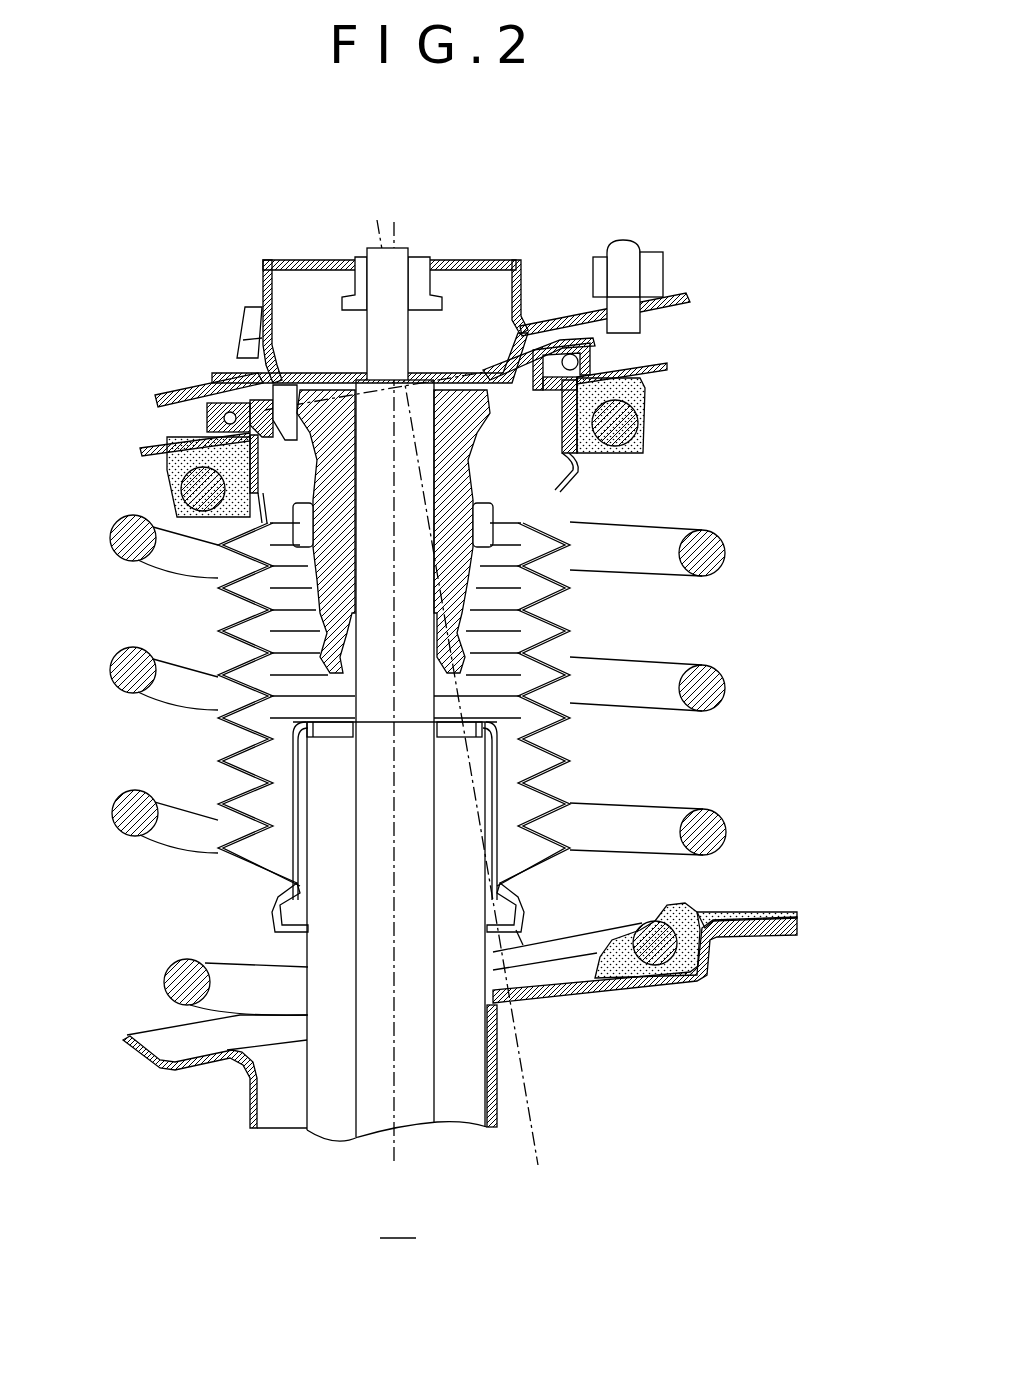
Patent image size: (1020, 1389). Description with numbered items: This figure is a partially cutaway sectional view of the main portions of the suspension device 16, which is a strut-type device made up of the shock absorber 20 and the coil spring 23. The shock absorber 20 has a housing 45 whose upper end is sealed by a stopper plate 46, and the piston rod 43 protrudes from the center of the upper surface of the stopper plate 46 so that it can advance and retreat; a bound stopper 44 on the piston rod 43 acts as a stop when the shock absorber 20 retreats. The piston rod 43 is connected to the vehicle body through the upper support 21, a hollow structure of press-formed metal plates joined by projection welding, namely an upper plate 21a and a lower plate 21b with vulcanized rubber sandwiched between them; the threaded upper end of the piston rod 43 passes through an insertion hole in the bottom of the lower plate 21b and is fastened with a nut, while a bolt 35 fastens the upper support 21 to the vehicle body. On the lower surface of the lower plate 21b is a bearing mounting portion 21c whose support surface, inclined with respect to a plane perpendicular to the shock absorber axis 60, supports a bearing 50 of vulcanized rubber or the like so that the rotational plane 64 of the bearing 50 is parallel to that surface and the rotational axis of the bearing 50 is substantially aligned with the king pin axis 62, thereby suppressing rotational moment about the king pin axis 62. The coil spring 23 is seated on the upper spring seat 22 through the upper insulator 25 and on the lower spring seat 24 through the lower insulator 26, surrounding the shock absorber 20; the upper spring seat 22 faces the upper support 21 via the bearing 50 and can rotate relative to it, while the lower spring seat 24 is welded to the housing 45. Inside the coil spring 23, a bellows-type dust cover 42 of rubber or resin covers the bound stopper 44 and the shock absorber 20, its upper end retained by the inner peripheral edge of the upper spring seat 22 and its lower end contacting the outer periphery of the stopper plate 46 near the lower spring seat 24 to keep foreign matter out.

The suspension device 16 is at (398, 1223).
The shock absorber 20 is at (371, 665).
The upper support 21 is at (395, 302).
The upper plate 21a is at (283, 260).
The lower plate 21b is at (228, 417).
The bearing mounting portion 21c is at (583, 340).
The upper spring seat 22 is at (667, 365).
The coil spring 23 is at (713, 540).
The lower spring seat 24 is at (693, 978).
The upper insulator 25 is at (647, 387).
The lower insulator 26 is at (690, 905).
The bolt 35 is at (260, 303).
The dust cover 42 is at (409, 734).
The piston rod 43 is at (410, 627).
The bound stopper 44 is at (220, 597).
The housing 45 is at (463, 1098).
The stopper plate 46 is at (517, 723).
The bearing 50 is at (240, 430).
The shock absorber axis 60 is at (393, 222).
The king pin axis 62 is at (377, 222).
The rotational plane 64 is at (265, 370).